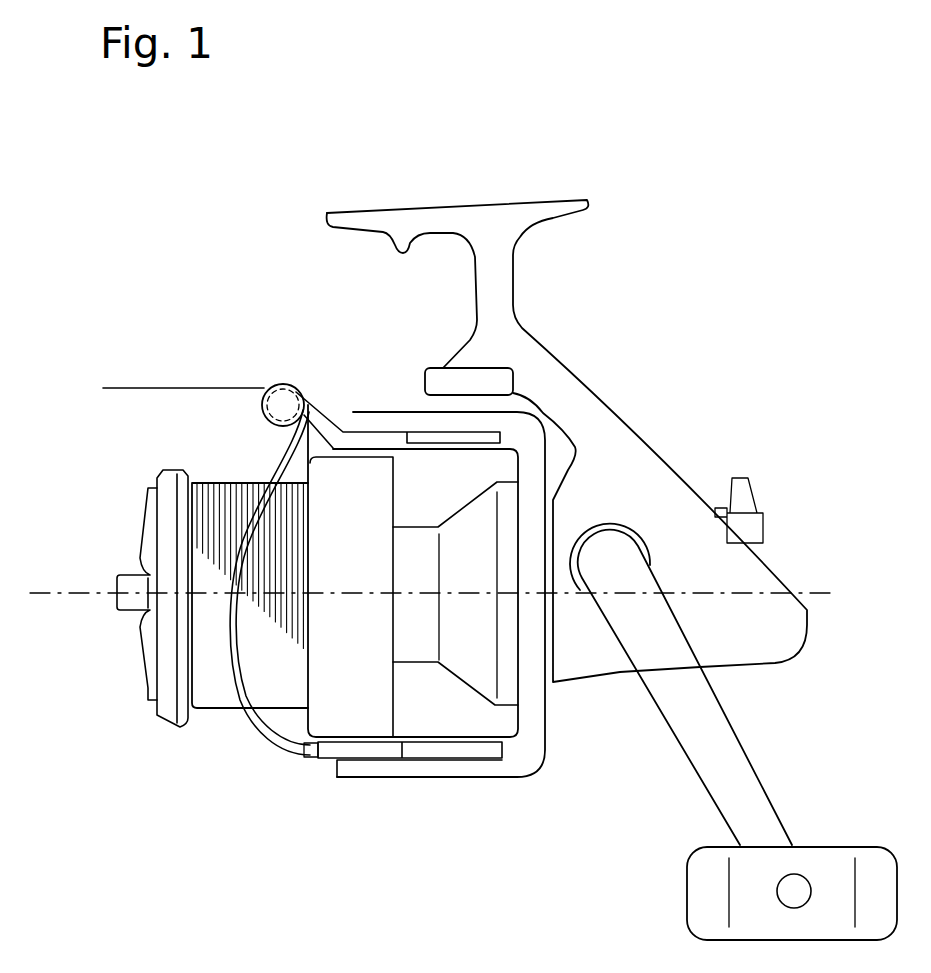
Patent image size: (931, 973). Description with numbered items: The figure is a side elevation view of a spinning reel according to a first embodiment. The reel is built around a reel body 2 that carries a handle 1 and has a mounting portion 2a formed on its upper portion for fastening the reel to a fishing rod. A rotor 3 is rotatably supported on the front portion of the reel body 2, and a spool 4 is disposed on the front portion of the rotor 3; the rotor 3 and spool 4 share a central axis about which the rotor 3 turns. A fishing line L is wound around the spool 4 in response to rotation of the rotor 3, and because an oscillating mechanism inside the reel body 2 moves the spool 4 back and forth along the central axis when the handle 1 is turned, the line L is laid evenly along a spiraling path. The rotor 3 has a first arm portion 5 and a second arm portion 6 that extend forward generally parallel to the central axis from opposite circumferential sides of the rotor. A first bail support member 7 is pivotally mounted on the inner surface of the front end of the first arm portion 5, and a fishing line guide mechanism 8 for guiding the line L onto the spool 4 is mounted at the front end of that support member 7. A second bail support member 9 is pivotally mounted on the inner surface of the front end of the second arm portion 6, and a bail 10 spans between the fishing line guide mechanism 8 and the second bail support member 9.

The handle 1 is at (752, 775).
The reel body 2 is at (685, 477).
The mounting portion 2a is at (516, 202).
The rotor 3 is at (477, 673).
The spool 4 is at (208, 485).
The first arm portion 5 is at (412, 410).
The second arm portion 6 is at (433, 770).
The first bail support member 7 is at (332, 402).
The fishing line guide mechanism 8 is at (268, 388).
The second bail support member 9 is at (367, 752).
The bail 10 is at (232, 656).
The fishing line L is at (160, 386).